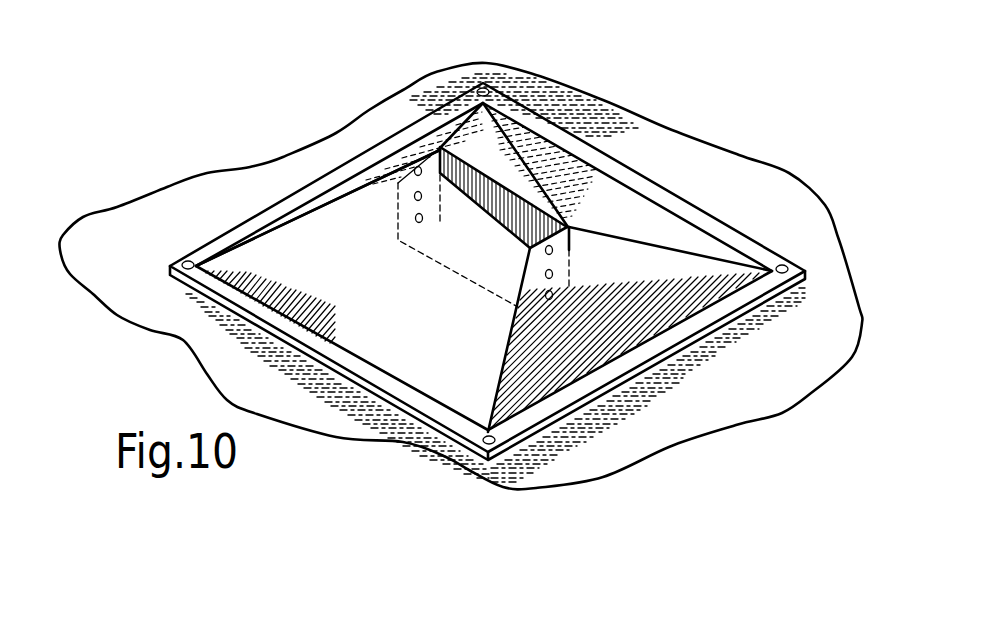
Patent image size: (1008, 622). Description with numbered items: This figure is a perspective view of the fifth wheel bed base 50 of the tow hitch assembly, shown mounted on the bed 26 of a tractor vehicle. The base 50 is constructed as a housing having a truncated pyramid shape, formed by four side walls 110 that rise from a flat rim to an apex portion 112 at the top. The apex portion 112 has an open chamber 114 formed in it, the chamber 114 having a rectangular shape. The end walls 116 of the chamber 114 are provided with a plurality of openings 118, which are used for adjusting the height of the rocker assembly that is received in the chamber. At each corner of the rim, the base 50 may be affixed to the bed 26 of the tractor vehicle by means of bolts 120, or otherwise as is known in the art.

The bed 26 is at (789, 190).
The base 50 is at (629, 137).
The side walls 110 is at (378, 189).
The apex portion 112 is at (531, 200).
The open chamber 114 is at (476, 194).
The end walls 116 is at (438, 150).
The openings 118 is at (414, 169).
The bolts 120 is at (479, 88).